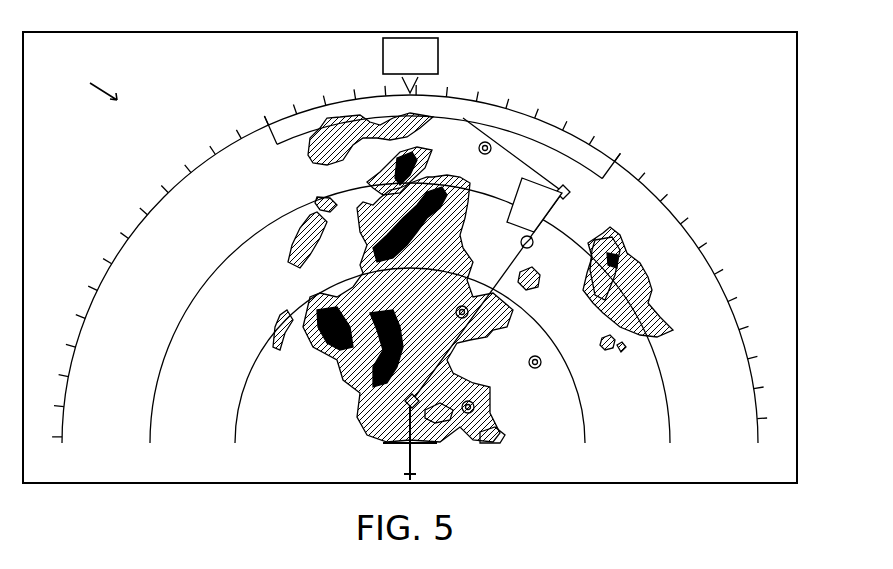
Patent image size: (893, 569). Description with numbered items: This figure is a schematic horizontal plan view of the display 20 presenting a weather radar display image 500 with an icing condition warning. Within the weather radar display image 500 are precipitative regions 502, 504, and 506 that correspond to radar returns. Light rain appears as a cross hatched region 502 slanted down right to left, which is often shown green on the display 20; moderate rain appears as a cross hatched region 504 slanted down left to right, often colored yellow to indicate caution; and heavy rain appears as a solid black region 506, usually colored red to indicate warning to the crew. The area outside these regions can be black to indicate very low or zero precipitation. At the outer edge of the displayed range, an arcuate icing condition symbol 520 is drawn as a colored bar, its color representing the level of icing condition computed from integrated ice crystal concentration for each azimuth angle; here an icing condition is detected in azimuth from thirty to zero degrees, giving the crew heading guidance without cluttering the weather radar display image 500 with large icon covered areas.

The display 20 is at (782, 58).
The weather radar display image 500 is at (248, 254).
The light rain precipitative region 502 is at (505, 335).
The moderate rain precipitative region 504 is at (430, 262).
The heavy rain precipitative region 506 is at (367, 266).
The icing condition symbol 520 is at (580, 127).